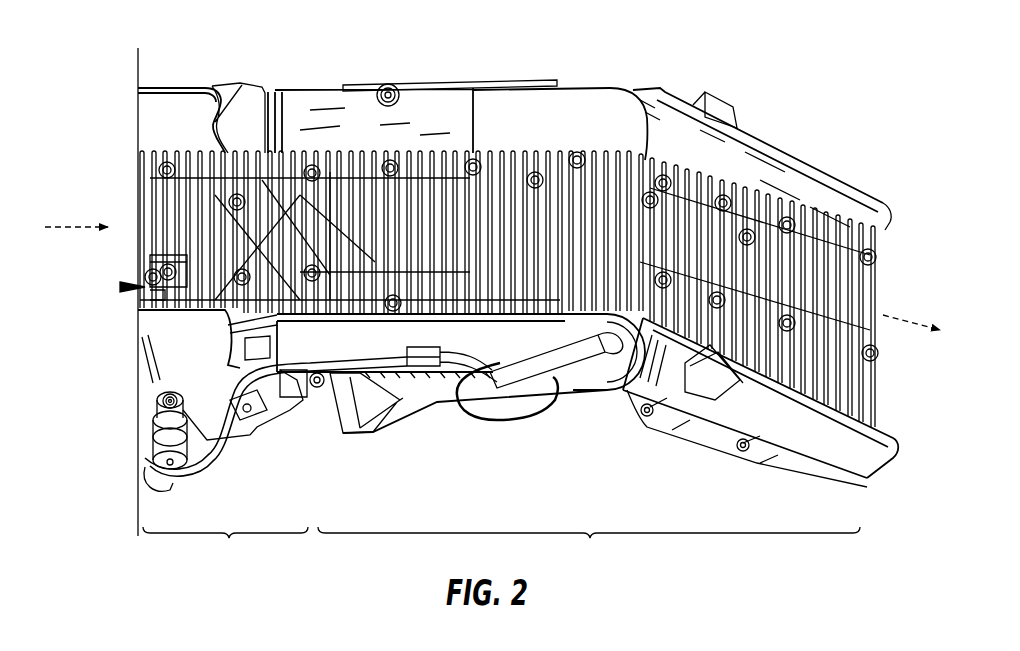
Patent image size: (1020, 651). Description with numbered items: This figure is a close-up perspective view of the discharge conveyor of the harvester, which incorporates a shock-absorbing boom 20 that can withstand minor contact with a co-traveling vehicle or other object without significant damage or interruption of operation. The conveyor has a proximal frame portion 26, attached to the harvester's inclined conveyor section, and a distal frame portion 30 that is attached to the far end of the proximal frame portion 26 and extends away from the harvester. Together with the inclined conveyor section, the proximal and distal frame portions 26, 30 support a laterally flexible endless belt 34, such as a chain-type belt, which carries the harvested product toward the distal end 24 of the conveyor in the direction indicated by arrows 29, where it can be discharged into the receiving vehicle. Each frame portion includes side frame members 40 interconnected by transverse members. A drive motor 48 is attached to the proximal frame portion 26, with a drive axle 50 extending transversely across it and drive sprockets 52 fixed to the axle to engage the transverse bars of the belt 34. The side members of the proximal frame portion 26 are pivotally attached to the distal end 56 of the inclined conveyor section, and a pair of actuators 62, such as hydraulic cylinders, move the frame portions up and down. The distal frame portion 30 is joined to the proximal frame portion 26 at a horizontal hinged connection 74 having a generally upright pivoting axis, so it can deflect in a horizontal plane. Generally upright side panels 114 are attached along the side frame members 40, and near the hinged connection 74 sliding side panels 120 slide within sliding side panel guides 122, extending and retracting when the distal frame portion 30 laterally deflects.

The shock-absorbing boom 20 is at (710, 58).
The distal end 24 is at (918, 250).
The proximal frame portion 26 is at (225, 551).
The arrows 29 is at (78, 222).
The distal frame portion 30 is at (589, 551).
The endless belt 34 is at (826, 237).
The side frame members 40 is at (410, 413).
The drive motor 48 is at (143, 455).
The drive axle 50 is at (153, 297).
The drive sprockets 52 is at (150, 262).
The distal end 56 is at (116, 102).
The actuators 62 is at (219, 438).
The horizontal hinged connection 74 is at (317, 425).
The upright side panels 114 is at (185, 100).
The sliding side panels 120 is at (320, 106).
The sliding side panel guide 122 is at (389, 86).